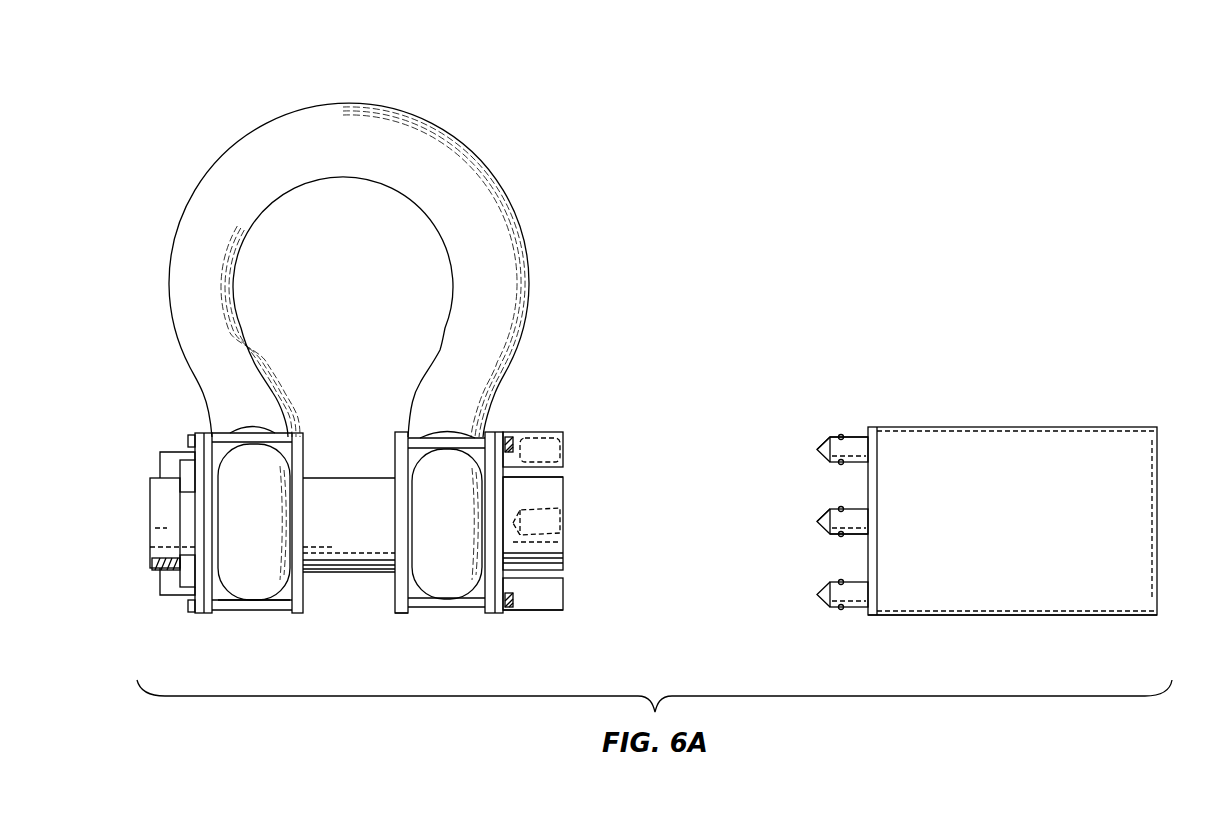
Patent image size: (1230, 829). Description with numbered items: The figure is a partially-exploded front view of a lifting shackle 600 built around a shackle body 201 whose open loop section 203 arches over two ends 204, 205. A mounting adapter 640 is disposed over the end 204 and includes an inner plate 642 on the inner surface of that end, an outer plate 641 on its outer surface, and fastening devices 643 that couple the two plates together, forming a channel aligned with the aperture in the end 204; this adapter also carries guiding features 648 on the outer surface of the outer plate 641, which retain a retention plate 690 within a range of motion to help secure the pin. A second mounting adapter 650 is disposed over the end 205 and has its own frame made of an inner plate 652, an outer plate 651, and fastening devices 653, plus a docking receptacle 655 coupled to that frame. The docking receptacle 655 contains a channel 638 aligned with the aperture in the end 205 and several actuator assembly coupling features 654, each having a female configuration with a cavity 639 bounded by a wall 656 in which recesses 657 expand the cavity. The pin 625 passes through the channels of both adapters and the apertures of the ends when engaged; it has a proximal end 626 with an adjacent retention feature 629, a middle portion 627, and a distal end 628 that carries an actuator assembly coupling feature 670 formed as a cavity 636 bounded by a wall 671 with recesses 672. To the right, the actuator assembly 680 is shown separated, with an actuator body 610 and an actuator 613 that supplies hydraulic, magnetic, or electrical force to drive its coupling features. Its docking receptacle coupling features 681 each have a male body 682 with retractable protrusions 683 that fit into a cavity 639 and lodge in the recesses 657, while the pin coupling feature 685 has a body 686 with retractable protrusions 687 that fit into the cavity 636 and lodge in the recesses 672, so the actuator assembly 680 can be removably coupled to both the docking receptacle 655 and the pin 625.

The shackle body 201 is at (347, 100).
The open loop section 203 is at (428, 135).
The end 204 is at (243, 596).
The end 205 is at (430, 592).
The lifting shackle 600 is at (1077, 100).
The actuator body 610 is at (1017, 424).
The actuator 613 is at (875, 623).
The pin 625 is at (356, 474).
The proximal end 626 is at (150, 526).
The middle portion 627 is at (362, 536).
The distal end 628 is at (560, 562).
The retention feature 629 is at (180, 486).
The cavity 636 is at (555, 523).
The channel 638 is at (552, 477).
The cavity 639 is at (555, 447).
The mounting adapter 640 is at (178, 616).
The outer plate 641 is at (201, 615).
The inner plate 642 is at (297, 615).
The fastening devices 643 is at (258, 612).
The guiding feature 648 is at (160, 462).
The mounting adapter 650 is at (520, 420).
The outer plate 651 is at (498, 614).
The inner plate 652 is at (399, 612).
The fastening devices 653 is at (412, 614).
The actuator assembly coupling feature 654 is at (575, 430).
The docking receptacle 655 is at (553, 430).
The wall 656 is at (550, 612).
The recess 657 is at (537, 612).
The actuator assembly coupling feature 670 is at (572, 538).
The wall 671 is at (553, 540).
The recess 672 is at (537, 510).
The actuator assembly 680 is at (1029, 360).
The docking receptacle coupling feature 681 is at (812, 449).
The body 682 is at (855, 433).
The retractable protrusion 683 is at (841, 437).
The pin coupling feature 685 is at (812, 521).
The body 686 is at (855, 535).
The retractable protrusion 687 is at (841, 510).
The retention plate 690 is at (173, 565).